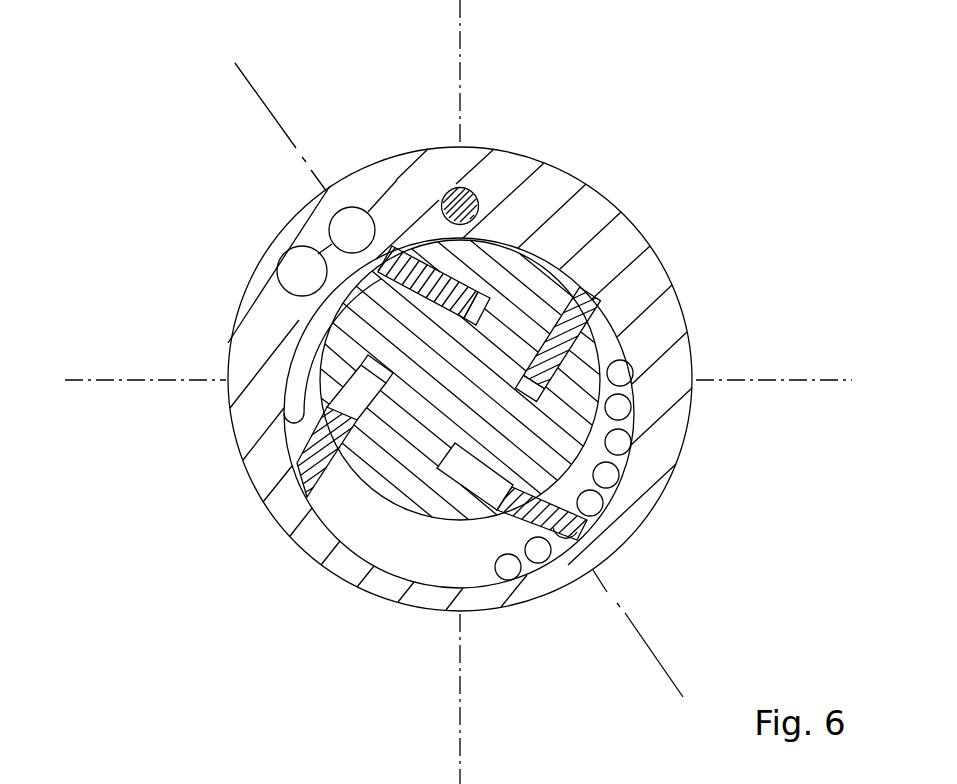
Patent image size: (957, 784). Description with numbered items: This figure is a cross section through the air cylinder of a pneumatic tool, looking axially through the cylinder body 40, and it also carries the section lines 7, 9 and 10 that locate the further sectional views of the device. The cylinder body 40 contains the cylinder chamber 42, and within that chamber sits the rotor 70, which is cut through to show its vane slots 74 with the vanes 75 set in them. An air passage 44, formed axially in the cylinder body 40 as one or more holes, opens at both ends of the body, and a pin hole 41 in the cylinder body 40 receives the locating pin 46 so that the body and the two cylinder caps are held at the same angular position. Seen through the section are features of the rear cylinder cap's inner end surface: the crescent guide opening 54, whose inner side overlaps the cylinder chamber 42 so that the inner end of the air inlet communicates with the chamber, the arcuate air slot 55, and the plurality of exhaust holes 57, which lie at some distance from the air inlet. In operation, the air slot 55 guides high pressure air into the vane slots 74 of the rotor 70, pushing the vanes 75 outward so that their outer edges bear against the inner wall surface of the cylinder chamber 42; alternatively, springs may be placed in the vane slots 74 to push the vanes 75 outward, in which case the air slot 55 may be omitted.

The section line 7- 7 is at (466, 735).
The section line 9- 9 is at (672, 667).
The section line 10- 10 is at (820, 370).
The cylinder body 40 is at (648, 277).
The pin hole 41 is at (478, 201).
The cylinder chamber 42 is at (365, 548).
The air passage 44 is at (352, 230).
The locating pin 46 is at (474, 188).
The guide opening 54 is at (281, 423).
The air slot 55 is at (345, 398).
The exhaust holes 57 is at (542, 556).
The rotor 70 is at (445, 497).
The vane slots 74 is at (370, 535).
The vanes 75 is at (557, 540).